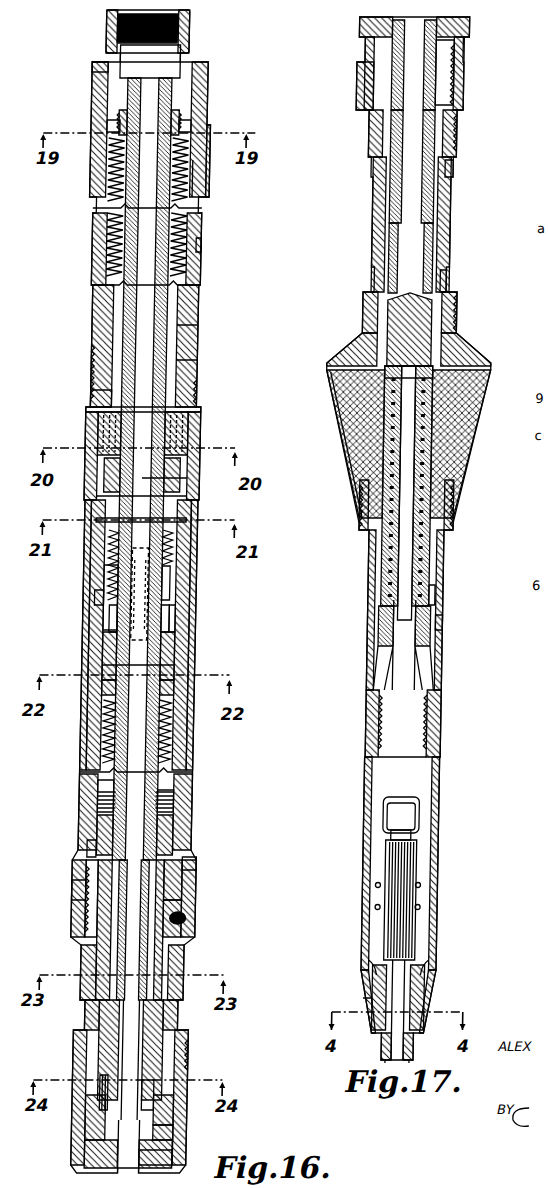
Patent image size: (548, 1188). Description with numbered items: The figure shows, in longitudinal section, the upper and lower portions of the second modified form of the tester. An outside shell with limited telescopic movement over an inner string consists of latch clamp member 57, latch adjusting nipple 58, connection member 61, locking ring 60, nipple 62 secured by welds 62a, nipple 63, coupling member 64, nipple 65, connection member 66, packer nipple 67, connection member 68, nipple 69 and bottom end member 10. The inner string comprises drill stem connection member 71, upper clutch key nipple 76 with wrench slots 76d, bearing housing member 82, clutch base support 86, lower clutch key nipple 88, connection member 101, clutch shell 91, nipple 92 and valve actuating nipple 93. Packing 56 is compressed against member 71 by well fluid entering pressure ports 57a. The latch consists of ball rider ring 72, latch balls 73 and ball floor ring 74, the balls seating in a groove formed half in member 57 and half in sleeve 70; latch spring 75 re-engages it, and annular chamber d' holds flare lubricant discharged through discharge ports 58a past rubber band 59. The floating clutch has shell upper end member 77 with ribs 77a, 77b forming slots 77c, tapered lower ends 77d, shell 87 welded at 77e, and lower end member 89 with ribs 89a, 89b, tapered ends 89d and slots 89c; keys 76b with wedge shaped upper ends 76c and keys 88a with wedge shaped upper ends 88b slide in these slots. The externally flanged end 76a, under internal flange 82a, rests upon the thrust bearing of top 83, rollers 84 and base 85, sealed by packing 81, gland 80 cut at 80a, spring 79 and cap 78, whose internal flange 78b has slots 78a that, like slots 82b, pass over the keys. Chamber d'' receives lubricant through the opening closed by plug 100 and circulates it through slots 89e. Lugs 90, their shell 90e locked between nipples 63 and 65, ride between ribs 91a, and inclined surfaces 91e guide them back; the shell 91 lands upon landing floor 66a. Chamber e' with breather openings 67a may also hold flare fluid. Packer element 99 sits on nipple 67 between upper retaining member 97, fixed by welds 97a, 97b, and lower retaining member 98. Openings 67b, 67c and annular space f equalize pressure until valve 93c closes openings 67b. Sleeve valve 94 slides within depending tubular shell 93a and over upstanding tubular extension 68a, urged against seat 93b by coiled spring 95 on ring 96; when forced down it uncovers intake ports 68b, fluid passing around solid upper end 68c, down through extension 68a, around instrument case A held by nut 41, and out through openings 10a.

In FIG. 16, the drill stem connection member 71 is at (191, 32).
In FIG. 16, the packing 56 is at (201, 66).
In FIG. 16, the latch clamp member 57 is at (202, 99).
In FIG. 16, the pressure ports 57a is at (96, 78).
In FIG. 16, the special wrench slots 76d is at (147, 99).
In FIG. 16, the ball rider ring 72 is at (112, 128).
In FIG. 16, the latch balls 73 is at (214, 125).
In FIG. 16, the ball floor ring 74 is at (115, 158).
In FIG. 16, the sleeve 70 is at (210, 172).
In FIG. 16, the latch spring 75 is at (108, 212).
In FIG. 16, the latch adjusting nipple 58 is at (207, 227).
In FIG. 16, the rubber band 59 is at (104, 244).
In FIG. 16, the discharge ports 58a is at (209, 246).
In FIG. 16, the annular chamber d' is at (203, 341).
In FIG. 16, the upper clutch key nipple 76 is at (137, 350).
In FIG. 16, the connection member 61 is at (107, 377).
In FIG. 16, the locking ring 60 is at (206, 375).
In FIG. 16, the internal longitudinal rib 77b is at (100, 400).
In FIG. 16, the welds 62a is at (208, 397).
In FIG. 16, the internal longitudinal ribs 77a is at (203, 414).
In FIG. 16, the shell upper end member 77 is at (199, 455).
In FIG. 16, the wedge shaped upper ends 76c is at (131, 432).
In FIG. 16, the upper clutch keys 76b is at (184, 449).
In FIG. 16, the weld 77e is at (118, 463).
In FIG. 16, the tapered lower ends 77d is at (200, 509).
In FIG. 16, the slots 77c is at (188, 483).
In FIG. 16, the nipple 62 is at (211, 778).
In FIG. 16, the slots 78a is at (130, 520).
In FIG. 16, the internal flange 78b is at (178, 525).
In FIG. 16, the cap 78 is at (118, 545).
In FIG. 16, the spring 79 is at (176, 560).
In FIG. 16, the gland 80 is at (118, 567).
In FIG. 16, the shell 87 is at (107, 740).
In FIG. 16, the cut 80a is at (112, 600).
In FIG. 16, the packing 81 is at (176, 600).
In FIG. 16, the longitudinal slots 82b is at (142, 622).
In FIG. 16, the internal flange 82a is at (182, 627).
In FIG. 16, the bearing housing member 82 is at (113, 649).
In FIG. 16, the externally flanged end 76a is at (203, 650).
In FIG. 16, the top 83 is at (171, 667).
In FIG. 16, the rollers 84 is at (124, 680).
In FIG. 16, the base 85 is at (184, 687).
In FIG. 16, the clutch base support 86 is at (185, 740).
In FIG. 16, the lower clutch key nipple 88 is at (118, 793).
In FIG. 16, the wedge shaped upper ends 88b is at (194, 807).
In FIG. 16, the lower clutch keys 88a is at (109, 835).
In FIG. 16, the lower end member 89 is at (207, 839).
In FIG. 16, the rib 89b is at (107, 852).
In FIG. 16, the internal longitudinal ribs 89a is at (217, 862).
In FIG. 16, the tapered lower ends 89d is at (120, 912).
In FIG. 16, the slots 89e is at (198, 875).
In FIG. 16, the slots 89c is at (98, 892).
In FIG. 16, the chamber d'' is at (192, 911).
In FIG. 16, the plug 100 is at (204, 915).
In FIG. 16, the connection member 101 is at (124, 932).
In FIG. 16, the nipple 63 is at (201, 952).
In FIG. 16, the ribs 91a is at (186, 1027).
In FIG. 16, the coupling member 64 is at (210, 1050).
In FIG. 16, the inclined surfaces 91e is at (127, 1092).
In FIG. 16, the lugs 90 is at (190, 1097).
In FIG. 16, the shell 90e is at (210, 1132).
In FIG. 16, the nipple 92 is at (207, 1152).
In FIG. 17, the nipple 92 is at (398, 49).
In FIG. 16, the clutch shell 91 is at (72, 1117).
In FIG. 17, the clutch shell 91 is at (365, 21).
In FIG. 16, the nipple 65 is at (132, 1162).
In FIG. 17, the nipple 65 is at (468, 39).
In FIG. 17, the chamber e' is at (466, 72).
In FIG. 17, the landing floor 66a is at (378, 109).
In FIG. 17, the connection member 66 is at (466, 112).
In FIG. 17, the breather openings 67a is at (456, 170).
In FIG. 17, the packer nipple 67 is at (383, 655).
In FIG. 17, the valve 93c is at (438, 247).
In FIG. 17, the openings 67b is at (453, 270).
In FIG. 17, the valve actuating nipple 93 is at (395, 279).
In FIG. 17, the seat 93b is at (400, 305).
In FIG. 17, the weld 97b is at (465, 305).
In FIG. 17, the sleeve valve 94 is at (400, 337).
In FIG. 17, the solid upper end 68c is at (420, 339).
In FIG. 17, the upper retaining member 97 is at (547, 359).
In FIG. 17, the intake ports 68b is at (422, 377).
In FIG. 17, the weld 97a is at (357, 399).
In FIG. 17, the packer element 99 is at (358, 429).
In FIG. 17, the coiled spring 95 is at (452, 429).
In FIG. 17, the lower retaining member 98 is at (367, 502).
In FIG. 17, the depending tubular shell 93a is at (429, 542).
In FIG. 17, the annular space f is at (396, 612).
In FIG. 17, the ring 96 is at (440, 595).
In FIG. 17, the openings 67c is at (448, 622).
In FIG. 17, the upstanding tubular extension 68a is at (431, 661).
In FIG. 17, the connection member 68 is at (440, 720).
In FIG. 17, the nipple 69 is at (442, 837).
In FIG. 17, the instrument case A is at (413, 940).
In FIG. 17, the openings 10a is at (382, 1006).
In FIG. 17, the bottom end member 10 is at (437, 1010).
In FIG. 17, the nut 41 is at (417, 1047).